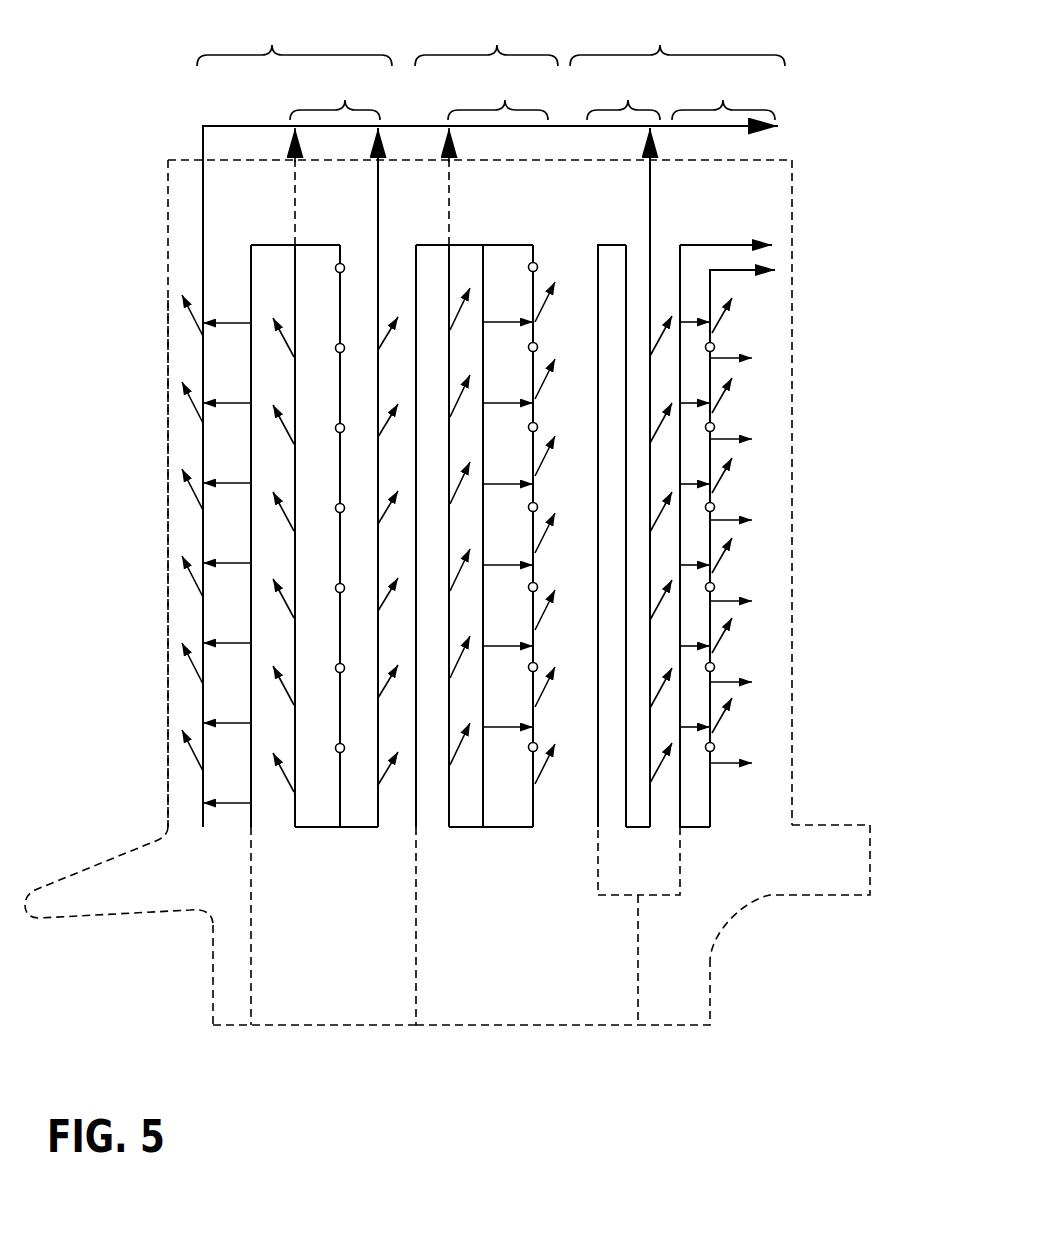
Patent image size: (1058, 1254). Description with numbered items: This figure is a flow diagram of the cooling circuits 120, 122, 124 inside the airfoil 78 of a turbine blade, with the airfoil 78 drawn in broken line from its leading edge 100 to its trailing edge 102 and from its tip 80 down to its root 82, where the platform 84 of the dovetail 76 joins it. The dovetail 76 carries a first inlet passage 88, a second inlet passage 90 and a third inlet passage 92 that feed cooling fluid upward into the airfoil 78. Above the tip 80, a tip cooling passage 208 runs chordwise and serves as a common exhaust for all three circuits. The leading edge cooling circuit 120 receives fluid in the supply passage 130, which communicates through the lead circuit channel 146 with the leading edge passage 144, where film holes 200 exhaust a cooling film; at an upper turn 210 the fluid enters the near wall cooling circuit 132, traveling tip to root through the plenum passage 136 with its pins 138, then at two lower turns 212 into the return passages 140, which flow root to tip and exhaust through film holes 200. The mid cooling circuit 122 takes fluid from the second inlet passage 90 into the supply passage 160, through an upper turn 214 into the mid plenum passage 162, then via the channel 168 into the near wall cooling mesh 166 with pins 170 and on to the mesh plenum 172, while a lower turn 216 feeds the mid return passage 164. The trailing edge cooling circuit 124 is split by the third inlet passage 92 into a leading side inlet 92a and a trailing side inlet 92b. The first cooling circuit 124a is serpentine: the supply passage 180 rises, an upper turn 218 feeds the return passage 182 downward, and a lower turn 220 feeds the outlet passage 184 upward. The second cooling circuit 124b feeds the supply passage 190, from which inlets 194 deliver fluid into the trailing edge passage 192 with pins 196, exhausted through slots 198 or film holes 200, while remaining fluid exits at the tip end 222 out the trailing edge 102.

The dovetail 76 is at (213, 980).
The airfoil 78 is at (165, 200).
The tip 80 is at (178, 158).
The root 82 is at (800, 825).
The platform 84 is at (62, 866).
The first inlet passage 88 is at (252, 980).
The second inlet passage 90 is at (417, 980).
The third inlet passage 92 is at (638, 982).
The leading side inlet 92a is at (598, 890).
The trailing side inlet 92b is at (680, 887).
The leading edge 100 is at (165, 268).
The trailing edge 102 is at (793, 215).
The leading edge cooling circuit 120 is at (294, 41).
The mid cooling circuit 122 is at (486, 41).
The trailing edge cooling circuit 124 is at (677, 41).
The first cooling circuit 124a is at (623, 159).
The second cooling circuit 124b is at (723, 96).
The supply passage 130 is at (254, 800).
The near wall cooling circuit 132 is at (335, 159).
The plenum passage 136 is at (341, 822).
The pins 138 is at (338, 262).
The return passages 140 is at (293, 298).
The leading edge passage 144 is at (203, 803).
The lead circuit channel 146 is at (237, 483).
The supply passage 160 is at (418, 803).
The mid plenum passage 162 is at (485, 828).
The mid return passage 164 is at (483, 830).
The near wall cooling mesh 166 is at (498, 159).
The channel 168 is at (490, 320).
The pins 170 is at (533, 262).
The mesh plenum 172 is at (527, 800).
The supply passage 180 is at (598, 262).
The return passage 182 is at (622, 268).
The outlet passage 184 is at (652, 808).
The supply passage 190 is at (683, 803).
The trailing edge passage 192 is at (715, 807).
The inlets 194 is at (685, 322).
The pins 196 is at (718, 425).
The slots 198 is at (728, 362).
The film holes 200 is at (388, 330).
The tip cooling passage 208 is at (205, 125).
The upper turn 210 is at (275, 245).
The lower turns 212 is at (303, 827).
The upper turn 214 is at (475, 245).
The lower turn 216 is at (453, 830).
The upper turn 218 is at (610, 245).
The lower turn 220 is at (637, 830).
The tip end 222 is at (718, 245).